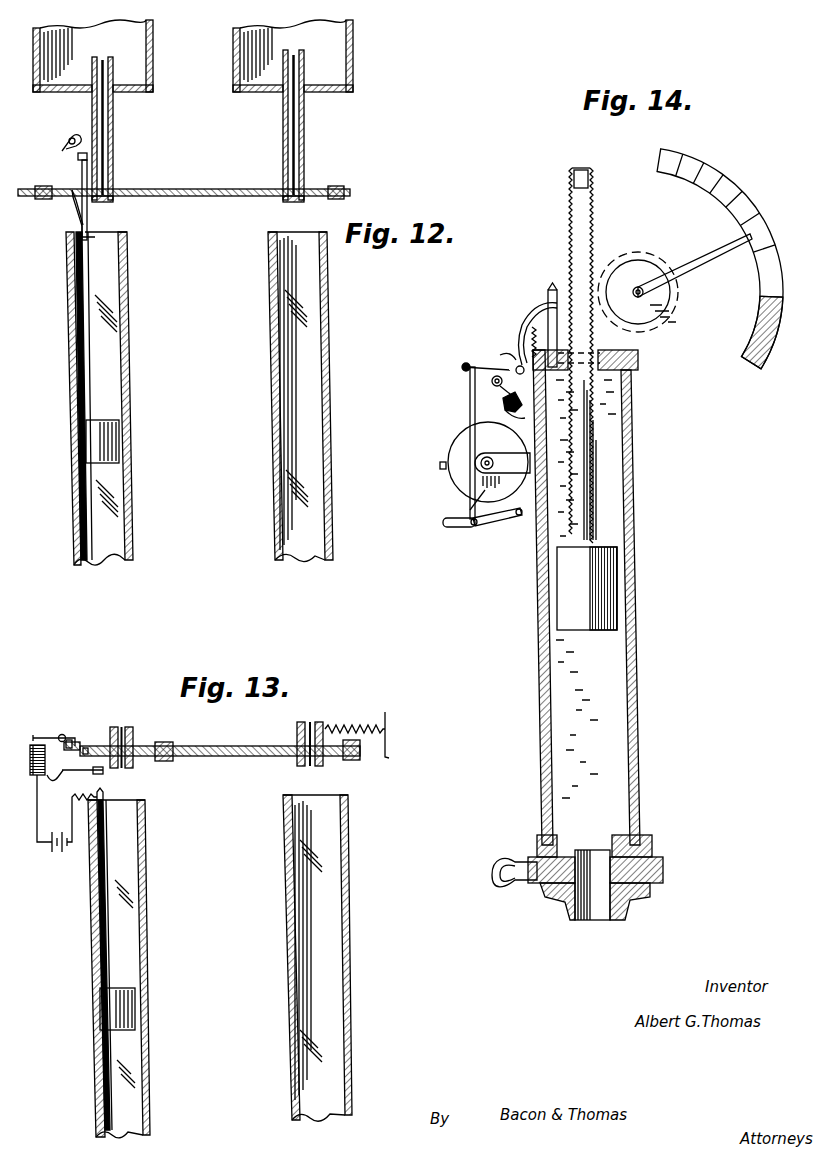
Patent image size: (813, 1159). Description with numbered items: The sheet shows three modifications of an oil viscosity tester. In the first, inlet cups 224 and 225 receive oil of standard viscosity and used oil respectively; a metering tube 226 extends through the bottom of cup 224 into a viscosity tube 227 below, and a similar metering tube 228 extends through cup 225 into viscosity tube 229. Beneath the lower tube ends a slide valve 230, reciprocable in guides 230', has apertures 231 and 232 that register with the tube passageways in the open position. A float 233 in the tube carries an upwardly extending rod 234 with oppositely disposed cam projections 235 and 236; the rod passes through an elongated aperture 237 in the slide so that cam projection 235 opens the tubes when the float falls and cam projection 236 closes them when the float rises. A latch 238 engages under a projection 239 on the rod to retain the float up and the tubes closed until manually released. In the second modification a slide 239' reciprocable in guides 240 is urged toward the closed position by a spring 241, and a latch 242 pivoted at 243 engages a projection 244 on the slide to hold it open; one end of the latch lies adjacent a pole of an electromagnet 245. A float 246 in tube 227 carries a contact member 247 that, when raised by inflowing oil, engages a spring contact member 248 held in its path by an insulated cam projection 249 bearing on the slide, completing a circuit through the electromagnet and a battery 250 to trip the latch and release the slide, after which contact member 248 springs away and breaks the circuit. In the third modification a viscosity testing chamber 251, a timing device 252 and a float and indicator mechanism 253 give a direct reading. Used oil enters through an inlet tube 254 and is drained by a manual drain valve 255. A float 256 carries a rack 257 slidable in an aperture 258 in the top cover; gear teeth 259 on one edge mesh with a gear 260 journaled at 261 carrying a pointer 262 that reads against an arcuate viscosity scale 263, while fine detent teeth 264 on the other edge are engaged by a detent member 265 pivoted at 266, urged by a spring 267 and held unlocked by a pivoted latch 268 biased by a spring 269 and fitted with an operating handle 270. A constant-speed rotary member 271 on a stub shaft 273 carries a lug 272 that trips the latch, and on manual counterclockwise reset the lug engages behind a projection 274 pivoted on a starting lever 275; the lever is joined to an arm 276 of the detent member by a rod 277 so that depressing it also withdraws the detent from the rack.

In FIG. 12, the inlet cup 224 is at (153, 53).
In FIG. 12, the inlet cup 225 is at (354, 53).
In FIG. 12, the metering tube 226 is at (113, 160).
In FIG. 13, the metering tube 226 is at (124, 727).
In FIG. 12, the viscosity tube 227 is at (131, 365).
In FIG. 13, the viscosity tube 227 is at (147, 928).
In FIG. 12, the metering tube 228 is at (304, 145).
In FIG. 13, the metering tube 228 is at (318, 722).
In FIG. 12, the viscosity tube 229 is at (330, 354).
In FIG. 13, the viscosity tube 229 is at (351, 960).
In FIG. 12, the slide valve 230 is at (184, 207).
In FIG. 12, the guides 230' is at (363, 177).
In FIG. 12, the aperture 231 is at (108, 203).
In FIG. 12, the aperture 232 is at (298, 203).
In FIG. 12, the float 233 is at (120, 448).
In FIG. 12, the rod 234 is at (74, 302).
In FIG. 12, the cam projection 235 is at (72, 190).
In FIG. 12, the cam projection 236 is at (100, 231).
In FIG. 12, the elongated aperture 237 is at (72, 198).
In FIG. 12, the latch 238 is at (61, 142).
In FIG. 12, the projection 239 is at (72, 174).
In FIG. 13, the slide 239' is at (212, 738).
In FIG. 13, the guides 240 is at (170, 742).
In FIG. 13, the spring 241 is at (368, 725).
In FIG. 13, the latch 242 is at (71, 740).
In FIG. 13, the pivot 243 is at (62, 734).
In FIG. 13, the projection 244 is at (36, 736).
In FIG. 13, the electromagnet 245 is at (40, 778).
In FIG. 13, the float 246 is at (136, 1006).
In FIG. 13, the contact member 247 is at (110, 875).
In FIG. 13, the spring contact member 248 is at (104, 772).
In FIG. 13, the insulated cam projection 249 is at (86, 746).
In FIG. 13, the battery 250 is at (60, 856).
In FIG. 14, the viscosity testing chamber 251 is at (642, 697).
In FIG. 14, the timing device 252 is at (446, 437).
In FIG. 14, the float and indicator mechanism 253 is at (641, 238).
In FIG. 14, the inlet tube 254 is at (549, 298).
In FIG. 14, the drain valve 255 is at (556, 884).
In FIG. 14, the float 256 is at (616, 592).
In FIG. 14, the rack 257 is at (596, 488).
In FIG. 14, the aperture 258 is at (618, 352).
In FIG. 14, the gear teeth 259 is at (590, 226).
In FIG. 14, the gear 260 is at (652, 265).
In FIG. 14, the journal 261 is at (662, 299).
In FIG. 14, the pointer 262 is at (710, 258).
In FIG. 14, the arcuate viscosity scale 263 is at (754, 208).
In FIG. 14, the detent teeth 264 is at (571, 220).
In FIG. 14, the detent member 265 is at (522, 325).
In FIG. 14, the pivot 266 is at (517, 366).
In FIG. 14, the spring 267 is at (515, 350).
In FIG. 14, the pivoted latch 268 is at (504, 414).
In FIG. 14, the spring 269 is at (492, 381).
In FIG. 14, the operating handle 270 is at (500, 355).
In FIG. 14, the rotary member 271 is at (480, 462).
In FIG. 14, the lug 272 is at (480, 470).
In FIG. 14, the stub shaft 273 is at (485, 478).
In FIG. 14, the projection 274 is at (486, 524).
In FIG. 14, the starting lever 275 is at (458, 529).
In FIG. 14, the arm 276 is at (463, 365).
In FIG. 14, the rod 277 is at (500, 398).